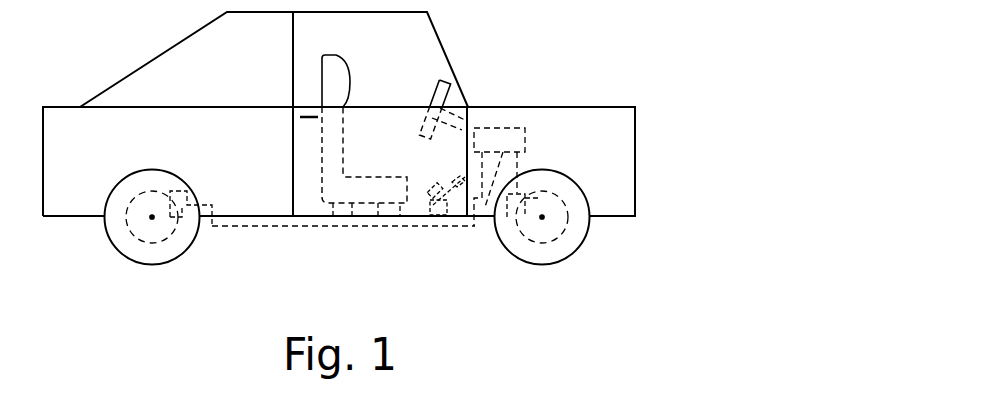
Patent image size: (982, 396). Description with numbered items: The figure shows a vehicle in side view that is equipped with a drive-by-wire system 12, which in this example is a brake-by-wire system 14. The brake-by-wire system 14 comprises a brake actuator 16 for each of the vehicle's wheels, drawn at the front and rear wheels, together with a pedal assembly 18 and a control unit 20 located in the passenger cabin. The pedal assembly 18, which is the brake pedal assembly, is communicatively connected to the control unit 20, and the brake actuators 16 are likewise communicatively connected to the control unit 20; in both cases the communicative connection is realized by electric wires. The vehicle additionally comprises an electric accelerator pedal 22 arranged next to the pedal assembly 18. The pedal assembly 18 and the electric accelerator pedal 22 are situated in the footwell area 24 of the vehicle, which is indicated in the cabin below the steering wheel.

The drive-by-wire system 12 is at (348, 119).
The brake-by-wire system 14 is at (562, 125).
The brake actuator 16 is at (182, 217).
The pedal assembly 18 is at (418, 193).
The control unit 20 is at (498, 138).
The electric accelerator pedal 22 is at (462, 178).
The footwell area 24 is at (414, 180).